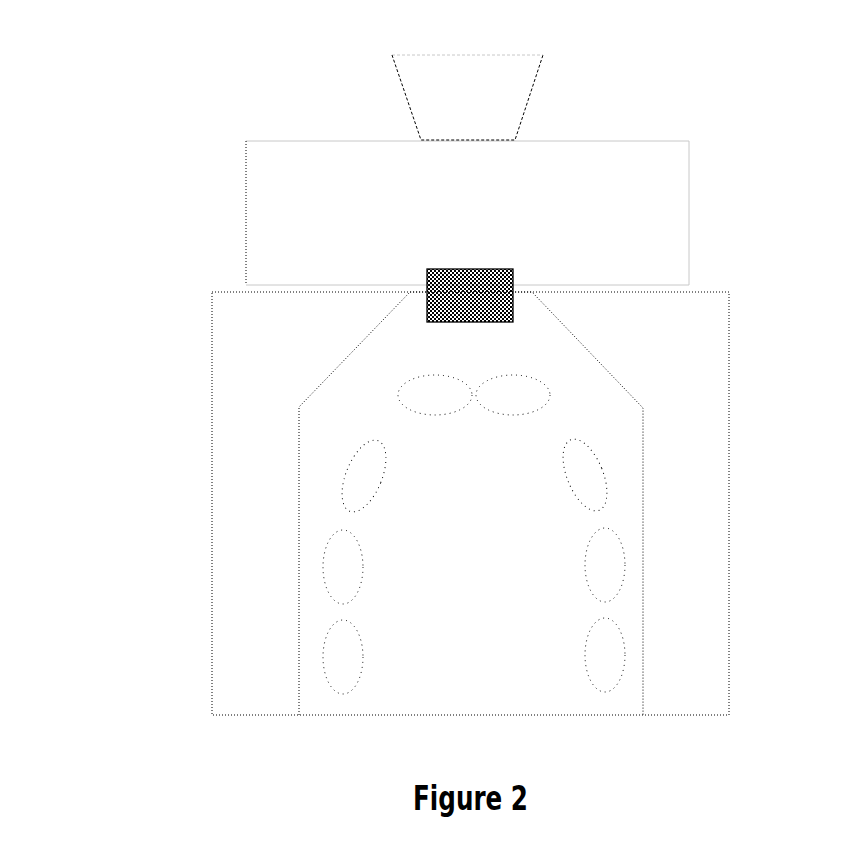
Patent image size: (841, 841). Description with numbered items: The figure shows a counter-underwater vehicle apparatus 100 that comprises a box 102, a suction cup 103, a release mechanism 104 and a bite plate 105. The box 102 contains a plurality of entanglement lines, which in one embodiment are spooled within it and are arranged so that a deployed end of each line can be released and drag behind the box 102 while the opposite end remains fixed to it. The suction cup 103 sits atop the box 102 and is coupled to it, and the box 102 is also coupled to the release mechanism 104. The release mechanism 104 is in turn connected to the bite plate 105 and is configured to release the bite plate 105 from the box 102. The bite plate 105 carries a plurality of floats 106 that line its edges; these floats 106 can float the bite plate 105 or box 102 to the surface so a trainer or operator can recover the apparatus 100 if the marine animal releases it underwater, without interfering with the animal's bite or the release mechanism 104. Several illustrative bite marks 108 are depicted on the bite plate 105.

The counter-underwater vehicle apparatus 100 is at (128, 100).
The box 102 is at (487, 226).
The suction cup 103 is at (528, 107).
The release mechanism 104 is at (488, 307).
The bite plate 105 is at (488, 516).
The floats 106 is at (227, 382).
The bite marks 108 is at (607, 689).